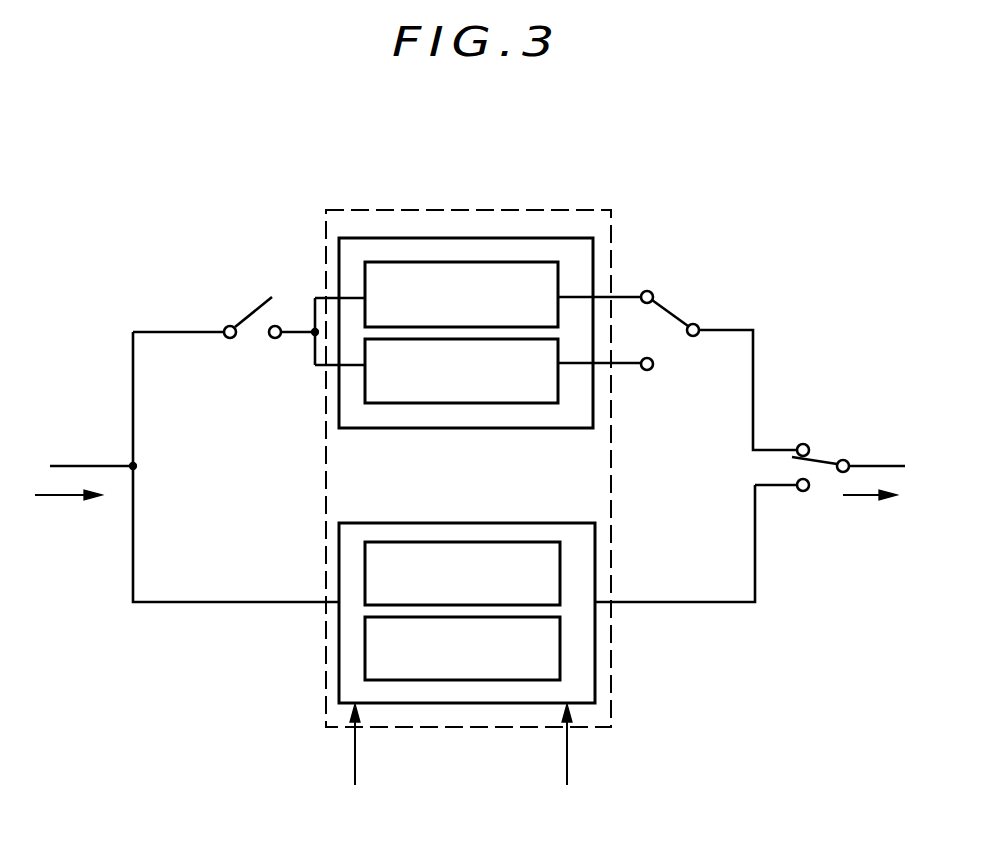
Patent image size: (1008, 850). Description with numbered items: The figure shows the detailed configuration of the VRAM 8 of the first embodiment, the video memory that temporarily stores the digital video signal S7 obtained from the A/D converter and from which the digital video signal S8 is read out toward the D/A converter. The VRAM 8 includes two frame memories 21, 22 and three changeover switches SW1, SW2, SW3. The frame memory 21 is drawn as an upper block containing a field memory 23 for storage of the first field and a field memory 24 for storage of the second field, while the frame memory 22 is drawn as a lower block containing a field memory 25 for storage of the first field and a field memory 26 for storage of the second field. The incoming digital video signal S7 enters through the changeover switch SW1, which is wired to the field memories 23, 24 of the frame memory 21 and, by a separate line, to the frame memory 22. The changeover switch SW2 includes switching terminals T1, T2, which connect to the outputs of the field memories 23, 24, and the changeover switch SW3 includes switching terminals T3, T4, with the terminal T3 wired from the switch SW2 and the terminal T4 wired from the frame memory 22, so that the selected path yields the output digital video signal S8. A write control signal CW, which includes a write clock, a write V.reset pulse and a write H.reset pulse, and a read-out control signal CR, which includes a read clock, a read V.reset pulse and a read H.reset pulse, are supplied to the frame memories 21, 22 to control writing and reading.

The VRAM 8 is at (240, 167).
The frame memory 21 is at (455, 238).
The frame memory 22 is at (472, 523).
The field memory 23 is at (522, 262).
The field memory 24 is at (365, 392).
The field memory 25 is at (560, 556).
The field memory 26 is at (560, 646).
The changeover switch SW1 is at (266, 292).
The changeover switch SW2 is at (677, 307).
The changeover switch SW3 is at (823, 450).
The switching terminal T1 is at (643, 290).
The switching terminal T2 is at (648, 371).
The switching terminal T3 is at (799, 443).
The switching terminal T4 is at (803, 492).
The digital video signal S7 is at (55, 498).
The digital video signal S8 is at (866, 498).
The write control signal CW is at (356, 763).
The read-out control signal CR is at (567, 763).